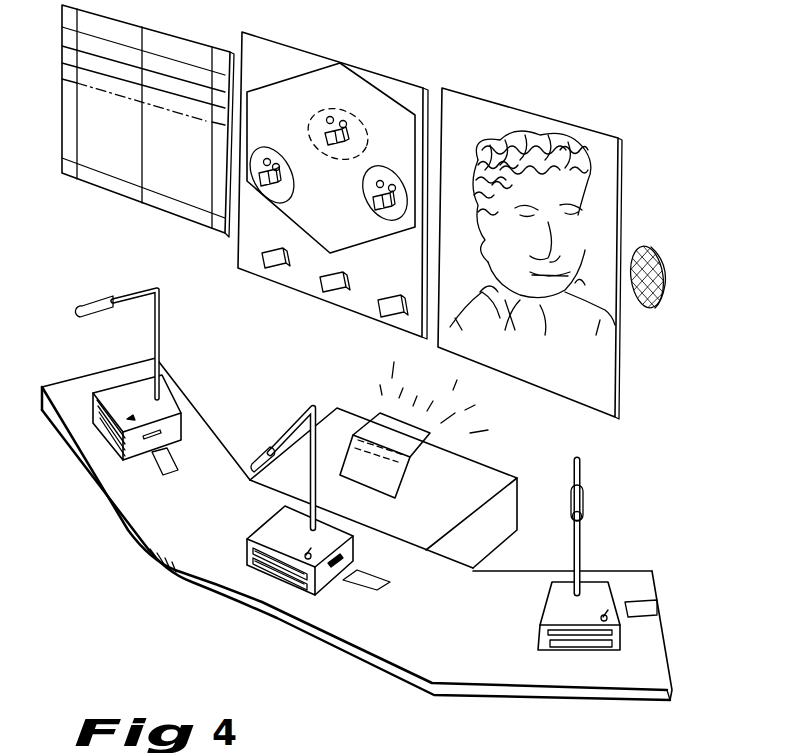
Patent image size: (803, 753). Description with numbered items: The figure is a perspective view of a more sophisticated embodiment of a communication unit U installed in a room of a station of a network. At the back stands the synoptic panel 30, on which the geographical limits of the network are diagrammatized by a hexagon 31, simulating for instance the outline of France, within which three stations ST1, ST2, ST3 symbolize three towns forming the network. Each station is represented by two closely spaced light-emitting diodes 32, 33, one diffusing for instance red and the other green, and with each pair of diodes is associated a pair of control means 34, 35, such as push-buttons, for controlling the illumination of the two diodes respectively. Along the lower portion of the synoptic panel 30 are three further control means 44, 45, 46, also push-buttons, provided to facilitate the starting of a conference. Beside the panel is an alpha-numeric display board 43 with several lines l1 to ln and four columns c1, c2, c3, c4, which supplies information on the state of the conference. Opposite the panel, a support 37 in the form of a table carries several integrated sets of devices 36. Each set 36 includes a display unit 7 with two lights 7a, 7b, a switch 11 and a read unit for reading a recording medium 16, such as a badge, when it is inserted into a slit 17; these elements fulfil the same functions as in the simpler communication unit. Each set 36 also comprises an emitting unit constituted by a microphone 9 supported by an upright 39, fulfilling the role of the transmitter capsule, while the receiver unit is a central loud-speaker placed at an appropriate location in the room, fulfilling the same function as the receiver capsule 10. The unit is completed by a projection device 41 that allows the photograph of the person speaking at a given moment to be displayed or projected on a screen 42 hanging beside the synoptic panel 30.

The display unit 7 is at (85, 440).
The light 7a is at (278, 560).
The light 7b is at (293, 580).
The microphone 9 is at (85, 306).
The receiver capsule 10 is at (646, 246).
The switch 11 is at (125, 415).
The recording medium 16 is at (170, 475).
The slit 17 is at (161, 434).
The synoptic panel 30 is at (425, 68).
The hexagon 31 is at (297, 48).
The light-emitting diode 32 is at (328, 117).
The light-emitting diode 33 is at (347, 122).
The control means 34 is at (327, 144).
The control means 35 is at (350, 140).
The integrated set of devices 36 is at (180, 398).
The support 37 is at (440, 652).
The upright 39 is at (161, 337).
The projection device 41 is at (465, 462).
The screen 42 is at (596, 115).
The alpha-numeric display board 43 is at (212, 30).
The control means 44 is at (278, 267).
The control means 45 is at (333, 292).
The control means 46 is at (392, 317).
The station ST1 is at (401, 240).
The station ST2 is at (290, 215).
The station ST3 is at (312, 126).
The line l1 is at (57, 32).
The line ln is at (58, 178).
The column c1 is at (66, 176).
The column c2 is at (118, 192).
The column c3 is at (173, 213).
The column c4 is at (220, 233).
The communication unit U is at (105, 580).